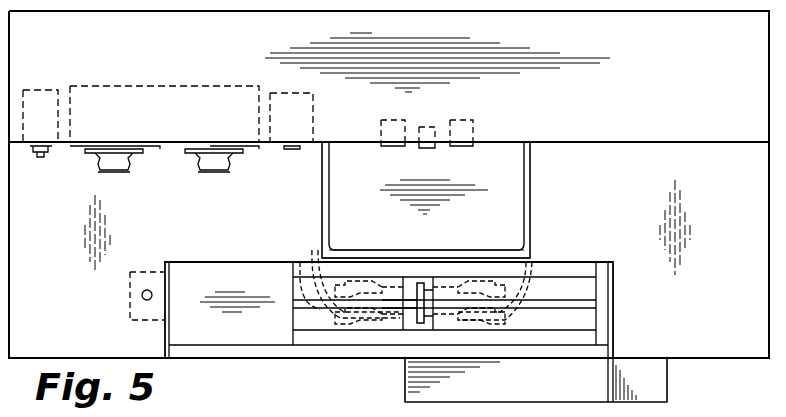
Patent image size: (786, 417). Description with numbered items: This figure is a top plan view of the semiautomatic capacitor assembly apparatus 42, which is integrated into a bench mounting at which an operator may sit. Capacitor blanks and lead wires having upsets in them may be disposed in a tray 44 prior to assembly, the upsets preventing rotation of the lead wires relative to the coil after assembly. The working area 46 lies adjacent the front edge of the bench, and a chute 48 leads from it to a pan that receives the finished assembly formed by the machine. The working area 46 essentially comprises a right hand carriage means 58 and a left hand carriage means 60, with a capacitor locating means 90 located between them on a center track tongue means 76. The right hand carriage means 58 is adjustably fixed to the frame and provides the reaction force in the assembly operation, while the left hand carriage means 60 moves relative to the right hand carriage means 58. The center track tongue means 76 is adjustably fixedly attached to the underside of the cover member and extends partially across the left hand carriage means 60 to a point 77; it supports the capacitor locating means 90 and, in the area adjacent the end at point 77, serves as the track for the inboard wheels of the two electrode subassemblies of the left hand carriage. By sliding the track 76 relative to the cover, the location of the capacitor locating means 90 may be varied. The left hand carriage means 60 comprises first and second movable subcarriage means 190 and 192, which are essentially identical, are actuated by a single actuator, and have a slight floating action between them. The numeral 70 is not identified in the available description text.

The apparatus 42 is at (322, 363).
The tray 44 is at (492, 168).
The working area 46 is at (490, 258).
The chute 48 is at (588, 382).
The right hand carriage means 58 is at (535, 292).
The left hand carriage means 60 is at (390, 280).
The carriage 70 is at (232, 362).
The center track tongue means 76 is at (412, 308).
The point 77 is at (380, 305).
The capacitor locating means 90 is at (421, 287).
The first movable subcarriage means 190 is at (320, 290).
The second movable subcarriage means 192 is at (306, 320).